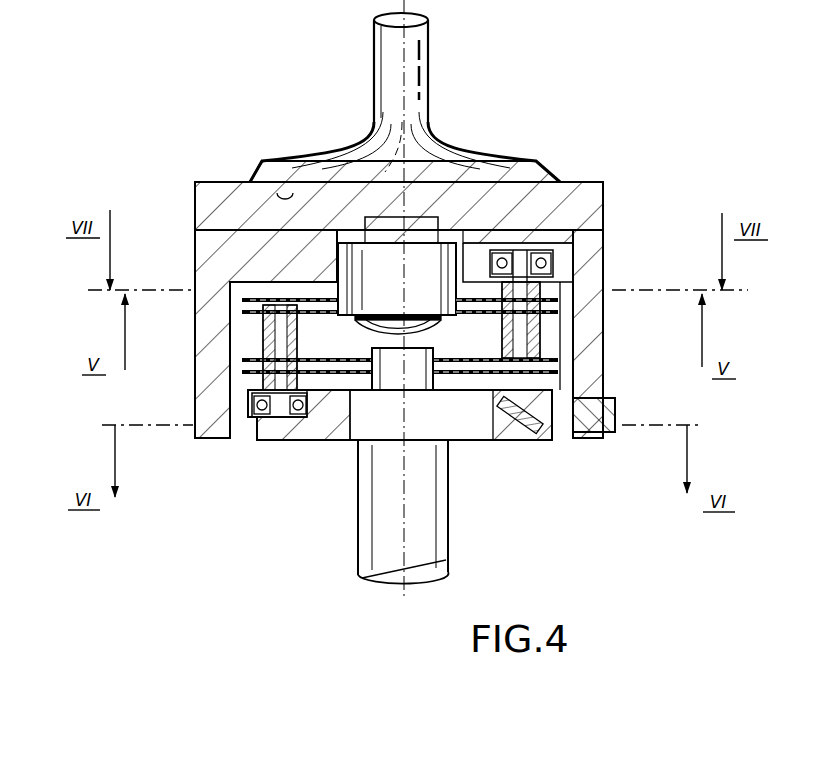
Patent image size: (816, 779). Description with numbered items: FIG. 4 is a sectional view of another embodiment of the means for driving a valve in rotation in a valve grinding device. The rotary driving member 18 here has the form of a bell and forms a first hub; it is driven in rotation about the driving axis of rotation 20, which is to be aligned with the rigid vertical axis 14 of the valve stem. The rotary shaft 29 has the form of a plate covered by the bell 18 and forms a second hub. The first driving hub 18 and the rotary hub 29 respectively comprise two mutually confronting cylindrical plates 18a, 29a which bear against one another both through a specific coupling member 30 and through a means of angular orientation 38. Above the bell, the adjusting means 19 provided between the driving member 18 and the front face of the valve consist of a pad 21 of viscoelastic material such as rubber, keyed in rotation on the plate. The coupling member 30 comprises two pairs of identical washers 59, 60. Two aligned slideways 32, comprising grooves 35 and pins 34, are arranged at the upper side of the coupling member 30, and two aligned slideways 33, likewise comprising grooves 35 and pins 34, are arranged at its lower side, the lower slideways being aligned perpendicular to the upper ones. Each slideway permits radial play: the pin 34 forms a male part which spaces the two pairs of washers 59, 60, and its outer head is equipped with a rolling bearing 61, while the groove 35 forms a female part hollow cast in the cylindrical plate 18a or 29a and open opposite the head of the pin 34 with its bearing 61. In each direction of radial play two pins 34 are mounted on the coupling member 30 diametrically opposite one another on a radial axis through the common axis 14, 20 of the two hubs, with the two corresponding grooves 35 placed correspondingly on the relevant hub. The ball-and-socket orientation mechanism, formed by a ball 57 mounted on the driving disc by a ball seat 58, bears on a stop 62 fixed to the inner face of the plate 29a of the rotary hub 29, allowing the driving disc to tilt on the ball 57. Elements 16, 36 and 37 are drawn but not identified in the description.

The rigid vertical axis 14 is at (405, 58).
The resilient bell member 16 is at (443, 130).
The rotary driving member 18 is at (195, 228).
The cylindrical plate 18a is at (253, 230).
The adjusting means 19 is at (257, 167).
The driving axis of rotation 20 is at (388, 138).
The pad 21 is at (563, 207).
The rotary shaft 29 is at (507, 442).
The cylindrical plate 29a is at (343, 440).
The coupling member 30 is at (447, 347).
The slideways 32 is at (574, 226).
The slideways 33 is at (308, 408).
The pin 34 is at (546, 262).
The groove 35 is at (483, 253).
The support block 36 is at (230, 252).
The screw 37 is at (469, 385).
The means of angular orientation 38 is at (382, 302).
The ball 57 is at (453, 230).
The ball seat 58 is at (380, 333).
The washers 59 is at (267, 328).
The washers 60 is at (487, 378).
The rolling bearing 61 is at (507, 255).
The stop 62 is at (360, 520).